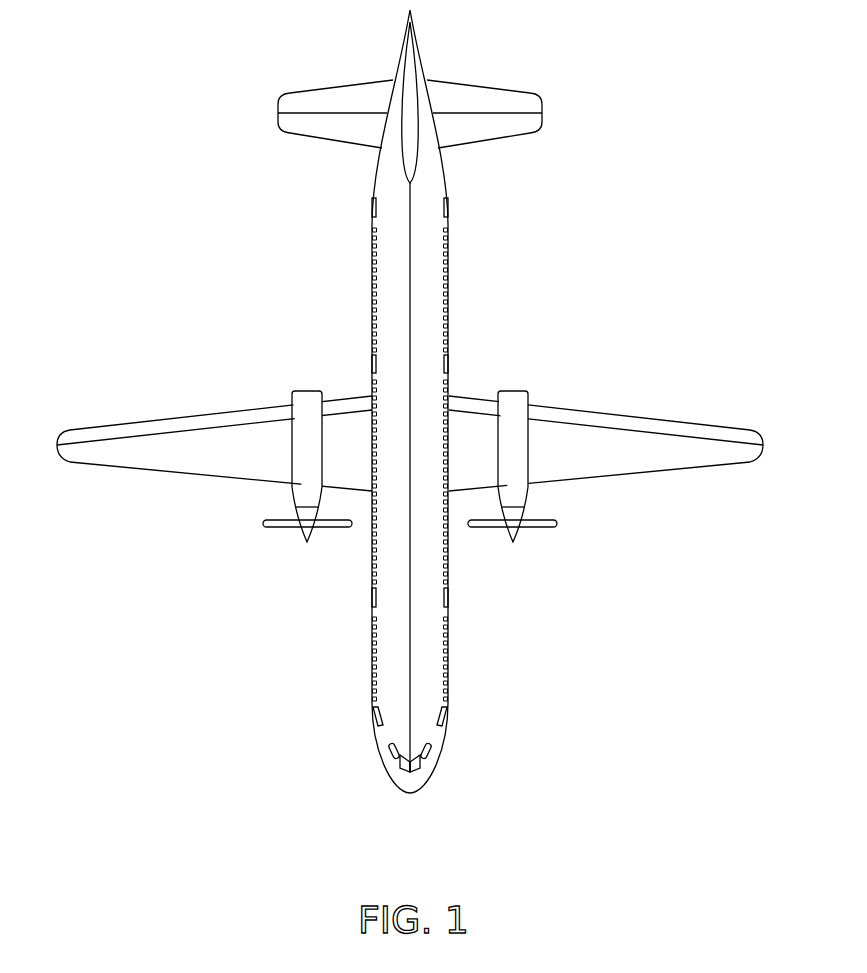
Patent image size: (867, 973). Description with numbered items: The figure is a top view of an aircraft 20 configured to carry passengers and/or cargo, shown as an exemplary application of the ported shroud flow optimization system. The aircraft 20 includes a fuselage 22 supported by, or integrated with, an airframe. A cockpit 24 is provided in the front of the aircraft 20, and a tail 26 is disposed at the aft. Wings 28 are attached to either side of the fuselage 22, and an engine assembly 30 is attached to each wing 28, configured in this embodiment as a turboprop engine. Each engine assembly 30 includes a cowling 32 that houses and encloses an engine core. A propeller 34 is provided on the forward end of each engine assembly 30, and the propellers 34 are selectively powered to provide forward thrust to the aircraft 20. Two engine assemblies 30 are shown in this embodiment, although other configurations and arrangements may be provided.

The aircraft 20 is at (410, 397).
The fuselage 22 is at (450, 280).
The cockpit 24 is at (437, 750).
The tail 26 is at (478, 86).
The wings 28 is at (212, 414).
The engine assembly 30 is at (290, 486).
The cowling 32 is at (290, 463).
The propeller 34 is at (283, 529).